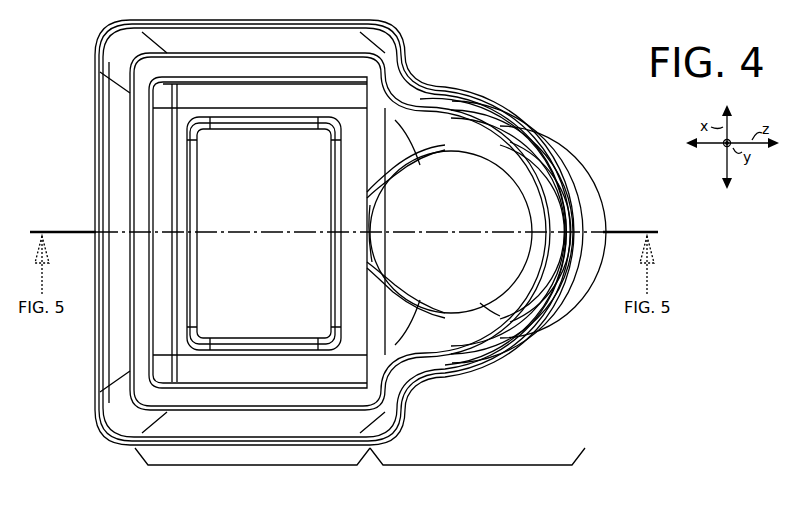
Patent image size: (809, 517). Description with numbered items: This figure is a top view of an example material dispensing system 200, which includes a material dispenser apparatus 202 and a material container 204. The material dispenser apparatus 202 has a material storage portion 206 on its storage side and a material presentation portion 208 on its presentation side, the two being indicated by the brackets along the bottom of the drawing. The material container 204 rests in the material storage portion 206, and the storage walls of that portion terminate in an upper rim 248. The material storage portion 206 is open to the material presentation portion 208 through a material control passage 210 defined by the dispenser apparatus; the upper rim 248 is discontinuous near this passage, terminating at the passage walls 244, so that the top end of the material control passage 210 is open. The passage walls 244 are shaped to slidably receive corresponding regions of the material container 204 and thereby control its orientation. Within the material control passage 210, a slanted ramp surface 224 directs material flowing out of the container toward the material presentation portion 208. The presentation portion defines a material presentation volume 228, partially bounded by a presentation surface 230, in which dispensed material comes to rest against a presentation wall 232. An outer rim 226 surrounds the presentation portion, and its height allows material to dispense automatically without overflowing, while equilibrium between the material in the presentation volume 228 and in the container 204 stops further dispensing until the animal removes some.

The material dispensing system 200 is at (465, 56).
The material dispenser apparatus 202 is at (600, 188).
The material container 204 is at (278, 193).
The material storage portion 206 is at (262, 466).
The material presentation portion 208 is at (485, 466).
The material control passage 210 is at (385, 208).
The ramp surface 224 is at (376, 250).
The outer rim 226 is at (555, 318).
The material presentation volume 228 is at (527, 185).
The presentation surface 230 is at (517, 261).
The presentation wall 232 is at (506, 312).
The passage walls 244 is at (377, 270).
The upper rim 248 is at (187, 76).